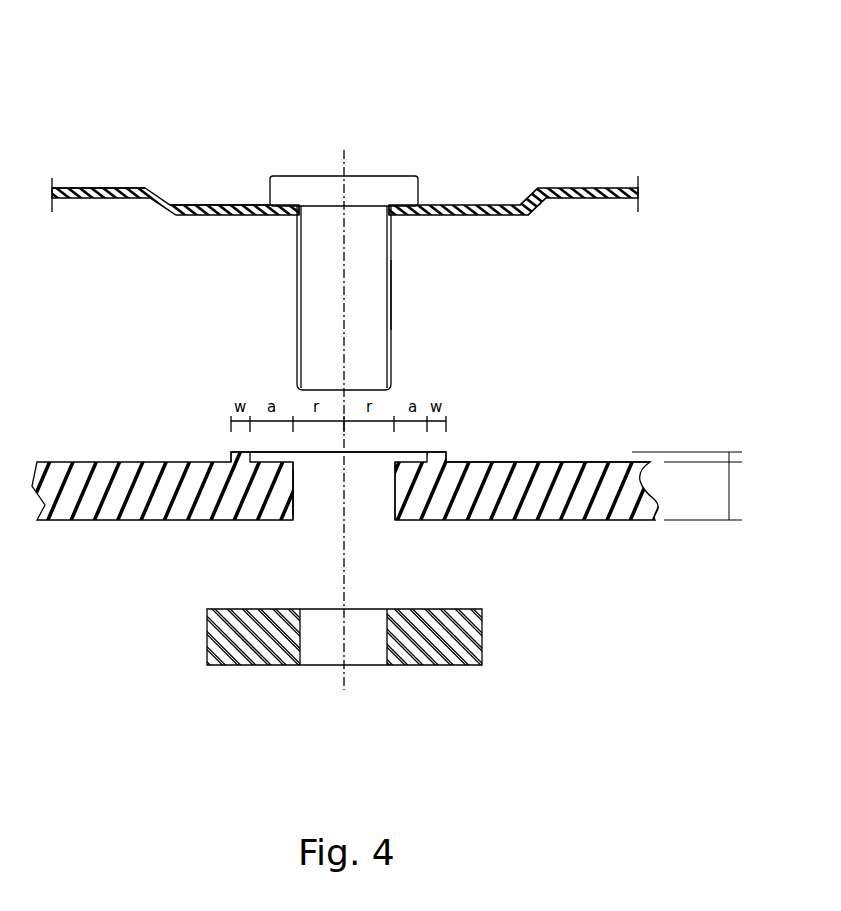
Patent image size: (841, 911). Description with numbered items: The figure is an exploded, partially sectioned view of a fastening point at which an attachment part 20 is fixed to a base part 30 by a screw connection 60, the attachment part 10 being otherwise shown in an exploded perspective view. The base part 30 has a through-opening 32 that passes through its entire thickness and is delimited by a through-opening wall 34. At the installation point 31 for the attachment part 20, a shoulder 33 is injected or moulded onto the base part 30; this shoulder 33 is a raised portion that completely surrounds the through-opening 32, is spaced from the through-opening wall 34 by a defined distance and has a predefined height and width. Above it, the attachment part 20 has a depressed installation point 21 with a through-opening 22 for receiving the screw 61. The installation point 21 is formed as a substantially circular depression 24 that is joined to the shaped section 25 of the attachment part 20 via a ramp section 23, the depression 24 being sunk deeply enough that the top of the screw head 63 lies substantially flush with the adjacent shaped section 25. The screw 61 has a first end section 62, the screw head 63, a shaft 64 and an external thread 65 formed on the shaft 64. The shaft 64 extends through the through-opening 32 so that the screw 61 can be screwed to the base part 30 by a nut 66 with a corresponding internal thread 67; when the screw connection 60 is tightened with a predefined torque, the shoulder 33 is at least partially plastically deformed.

The attachment part 10 is at (490, 78).
The attachment part 20 is at (600, 178).
The installation point 21 is at (500, 122).
The through-opening 22 is at (392, 213).
The ramp section 23 is at (535, 211).
The depression 24 is at (246, 215).
The shaped section 25 is at (112, 190).
The base part 30 is at (611, 458).
The installation point 31 is at (478, 380).
The through-opening 32 is at (358, 527).
The shoulder 33 is at (448, 457).
The through-opening wall 34 is at (294, 488).
The screw connection 60 is at (310, 448).
The screw 61 is at (295, 286).
The first end section 62 is at (315, 361).
The screw head 63 is at (360, 177).
The shaft 64 is at (355, 337).
The external thread 65 is at (392, 291).
The nut 66 is at (427, 666).
The internal thread 67 is at (301, 641).